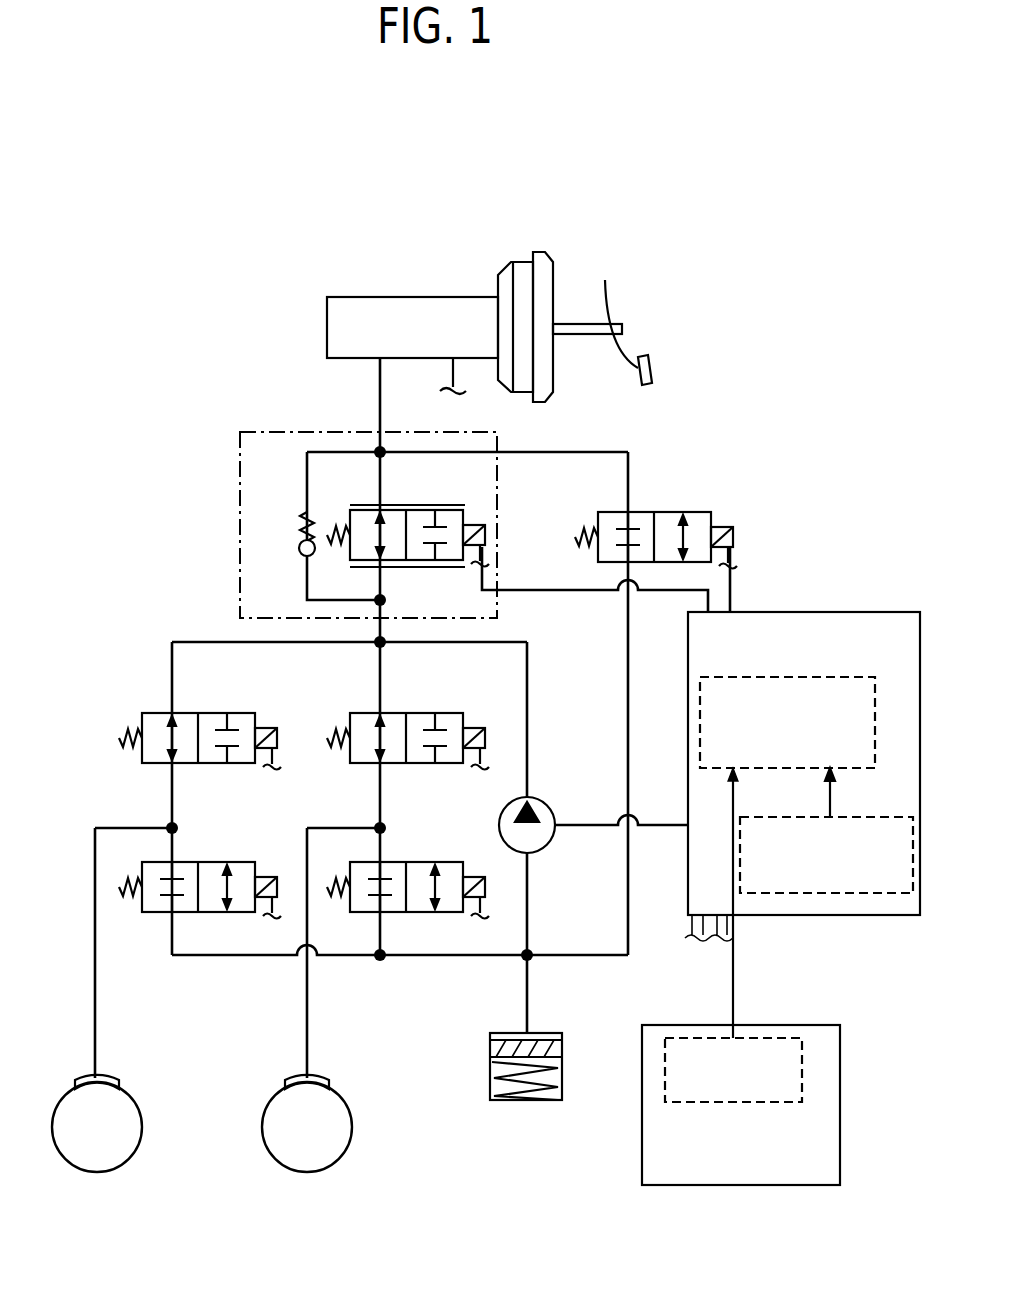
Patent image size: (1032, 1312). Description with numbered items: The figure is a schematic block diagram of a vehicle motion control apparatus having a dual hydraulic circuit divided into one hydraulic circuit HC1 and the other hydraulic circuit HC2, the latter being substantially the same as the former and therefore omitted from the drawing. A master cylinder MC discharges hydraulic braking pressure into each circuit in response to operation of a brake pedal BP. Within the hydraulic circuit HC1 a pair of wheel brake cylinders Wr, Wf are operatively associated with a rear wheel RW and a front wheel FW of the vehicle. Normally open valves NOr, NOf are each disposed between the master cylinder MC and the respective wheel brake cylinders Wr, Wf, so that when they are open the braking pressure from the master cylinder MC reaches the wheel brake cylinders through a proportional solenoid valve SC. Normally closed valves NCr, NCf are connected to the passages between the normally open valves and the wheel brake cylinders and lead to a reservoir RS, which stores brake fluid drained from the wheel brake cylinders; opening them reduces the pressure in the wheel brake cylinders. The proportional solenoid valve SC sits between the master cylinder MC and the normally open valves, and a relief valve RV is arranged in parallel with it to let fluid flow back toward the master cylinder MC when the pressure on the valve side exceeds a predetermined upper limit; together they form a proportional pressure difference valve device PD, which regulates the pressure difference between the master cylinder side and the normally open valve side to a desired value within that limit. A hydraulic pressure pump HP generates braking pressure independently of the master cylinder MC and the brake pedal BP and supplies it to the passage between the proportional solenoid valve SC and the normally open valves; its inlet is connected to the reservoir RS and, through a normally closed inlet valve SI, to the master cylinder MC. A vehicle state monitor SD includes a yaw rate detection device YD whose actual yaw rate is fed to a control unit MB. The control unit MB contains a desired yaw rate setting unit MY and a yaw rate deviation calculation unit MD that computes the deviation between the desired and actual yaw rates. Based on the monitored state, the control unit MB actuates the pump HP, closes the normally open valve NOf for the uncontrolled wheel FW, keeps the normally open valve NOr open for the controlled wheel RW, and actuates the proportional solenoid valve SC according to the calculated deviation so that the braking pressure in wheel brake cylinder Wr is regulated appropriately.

The master cylinder MC is at (327, 316).
The brake pedal BP is at (650, 357).
The one hydraulic circuit HC1 is at (380, 403).
The other hydraulic circuit HC2 is at (456, 385).
The proportional pressure difference valve device PD is at (240, 485).
The relief valve RV is at (296, 548).
The proportional solenoid valve SC is at (411, 510).
The inlet valve SI is at (658, 512).
The normally open valve NOf is at (198, 713).
The normally open valve NOr is at (405, 713).
The normally closed valve NCf is at (198, 862).
The normally closed valve NCr is at (405, 862).
The hydraulic pressure pump HP is at (536, 798).
The reservoir RS is at (490, 1050).
The wheel brake cylinder Wf is at (75, 1081).
The wheel brake cylinder Wr is at (285, 1081).
The wheel FW is at (97, 1127).
The wheel RW is at (307, 1127).
The control unit MB is at (779, 760).
The yaw rate deviation calculation unit MD is at (700, 723).
The desired yaw rate setting unit MY is at (830, 893).
The yaw rate detection device YD is at (765, 1038).
The vehicle state monitor SD is at (741, 1107).